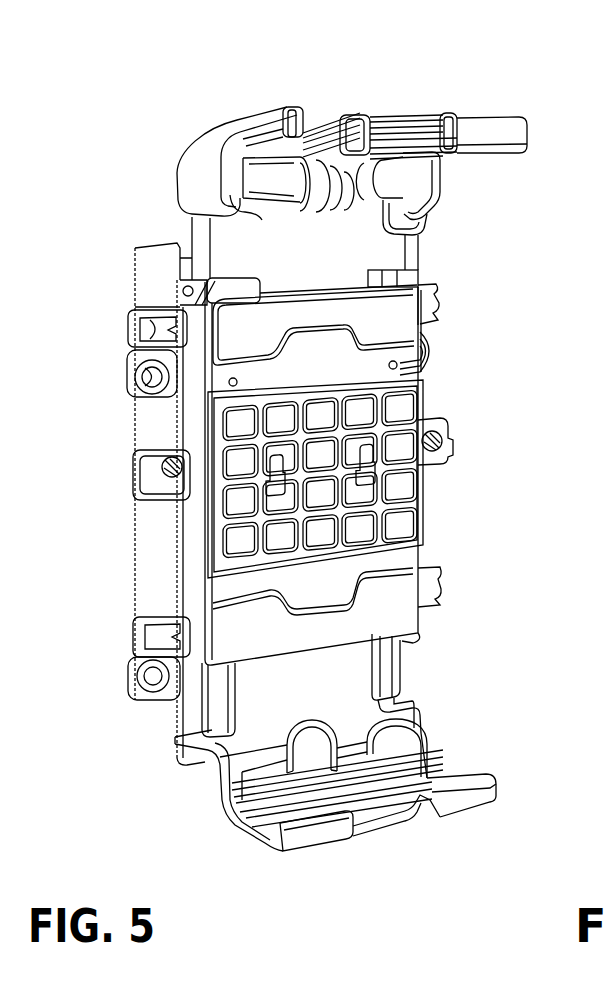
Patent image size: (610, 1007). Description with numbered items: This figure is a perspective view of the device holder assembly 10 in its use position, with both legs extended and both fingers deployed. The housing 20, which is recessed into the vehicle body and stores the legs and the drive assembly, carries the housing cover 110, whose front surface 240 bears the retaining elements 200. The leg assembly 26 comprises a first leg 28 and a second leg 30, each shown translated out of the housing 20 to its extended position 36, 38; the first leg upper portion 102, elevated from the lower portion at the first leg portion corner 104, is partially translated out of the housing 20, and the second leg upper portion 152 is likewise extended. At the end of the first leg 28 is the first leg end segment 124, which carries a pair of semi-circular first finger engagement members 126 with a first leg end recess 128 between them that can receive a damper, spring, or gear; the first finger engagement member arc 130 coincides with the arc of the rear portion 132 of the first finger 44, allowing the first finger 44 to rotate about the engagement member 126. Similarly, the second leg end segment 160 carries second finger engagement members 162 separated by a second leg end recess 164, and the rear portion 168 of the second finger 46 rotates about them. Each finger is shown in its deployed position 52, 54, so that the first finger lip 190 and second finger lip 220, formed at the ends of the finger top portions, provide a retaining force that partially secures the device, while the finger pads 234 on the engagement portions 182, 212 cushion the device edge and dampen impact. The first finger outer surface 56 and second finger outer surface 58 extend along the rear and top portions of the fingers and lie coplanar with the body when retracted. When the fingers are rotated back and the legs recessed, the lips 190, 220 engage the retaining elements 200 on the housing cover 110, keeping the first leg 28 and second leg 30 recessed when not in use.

The device holder assembly 10 is at (116, 135).
The housing 20 is at (155, 248).
The leg assembly 26 is at (443, 542).
The first leg 28 is at (380, 262).
The second leg 30 is at (370, 660).
The extended position 36 is at (410, 263).
The extended position 38 is at (253, 708).
The first finger 44 is at (218, 130).
The second finger 46 is at (207, 797).
The deployed position 52 is at (293, 108).
The deployed position 54 is at (262, 822).
The first finger outer surface 56 is at (348, 115).
The second finger outer surface 58 is at (335, 850).
The first leg upper portion 102 is at (222, 195).
The first leg portion corner 104 is at (180, 276).
The housing cover 110 is at (200, 393).
The first leg end segment 124 is at (412, 228).
The first finger engagement member 126 is at (272, 160).
The first leg end recess 128 is at (360, 160).
The first finger engagement member arc 130 is at (245, 172).
The rear portion 132 is at (205, 157).
The second leg upper portion 152 is at (238, 670).
The second leg end segment 160 is at (405, 710).
The second finger engagement member 162 is at (260, 770).
The second leg end recess 164 is at (375, 770).
The rear portion 168 is at (200, 803).
The engagement portion 182 is at (455, 122).
The first finger lip 190 is at (515, 138).
The retaining element 200 is at (433, 365).
The engagement portion 212 is at (455, 768).
The second finger lip 220 is at (478, 793).
The finger pad 234 is at (398, 130).
The front surface 240 is at (423, 510).